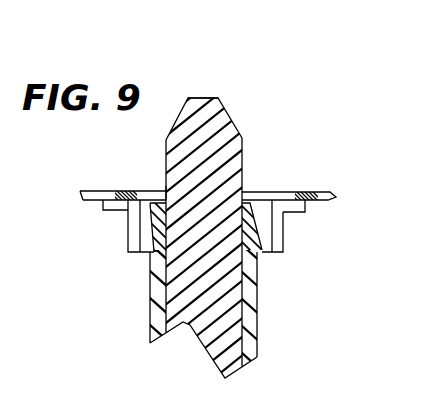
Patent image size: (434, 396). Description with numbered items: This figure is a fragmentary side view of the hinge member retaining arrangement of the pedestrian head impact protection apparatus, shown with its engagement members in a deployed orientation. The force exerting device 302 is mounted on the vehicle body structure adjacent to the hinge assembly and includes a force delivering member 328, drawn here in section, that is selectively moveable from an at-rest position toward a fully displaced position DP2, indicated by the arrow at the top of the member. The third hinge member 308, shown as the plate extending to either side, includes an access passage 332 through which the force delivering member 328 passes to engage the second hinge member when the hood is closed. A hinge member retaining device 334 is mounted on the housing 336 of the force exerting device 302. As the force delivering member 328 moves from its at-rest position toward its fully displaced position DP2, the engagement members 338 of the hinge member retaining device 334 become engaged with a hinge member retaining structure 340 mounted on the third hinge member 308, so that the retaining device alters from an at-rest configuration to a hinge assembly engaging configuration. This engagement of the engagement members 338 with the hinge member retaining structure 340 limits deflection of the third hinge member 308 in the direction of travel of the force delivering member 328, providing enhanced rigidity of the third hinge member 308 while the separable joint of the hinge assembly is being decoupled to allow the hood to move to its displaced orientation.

The force exerting device 302 is at (252, 342).
The force delivering member 328 is at (237, 147).
The housing 336 is at (252, 285).
The engagement members 338 is at (143, 226).
The hinge member retaining device 334 is at (152, 259).
The hinge member retaining structure 340 is at (127, 220).
The third hinge member 308 is at (320, 191).
The access passage 332 is at (164, 188).
The fully displaced position DP2 is at (206, 90).